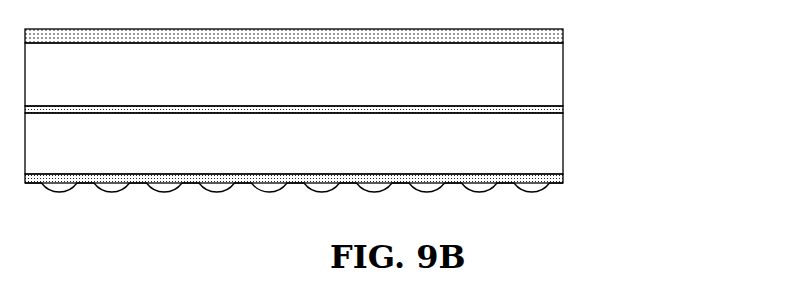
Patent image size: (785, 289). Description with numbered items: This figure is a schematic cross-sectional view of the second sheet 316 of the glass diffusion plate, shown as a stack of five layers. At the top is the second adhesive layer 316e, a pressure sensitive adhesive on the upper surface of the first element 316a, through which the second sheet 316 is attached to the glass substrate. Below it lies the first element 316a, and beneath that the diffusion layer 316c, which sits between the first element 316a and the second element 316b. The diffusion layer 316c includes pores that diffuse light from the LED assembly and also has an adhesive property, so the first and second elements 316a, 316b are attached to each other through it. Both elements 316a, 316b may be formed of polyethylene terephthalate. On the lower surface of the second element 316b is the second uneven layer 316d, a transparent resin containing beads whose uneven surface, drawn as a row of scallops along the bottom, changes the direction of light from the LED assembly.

The second sheet 316 is at (392, 109).
The first element 316a is at (550, 77).
The second element 316b is at (550, 143).
The diffusion layer 316c is at (562, 108).
The second uneven layer 316d is at (348, 180).
The second adhesive layer 316e is at (563, 34).